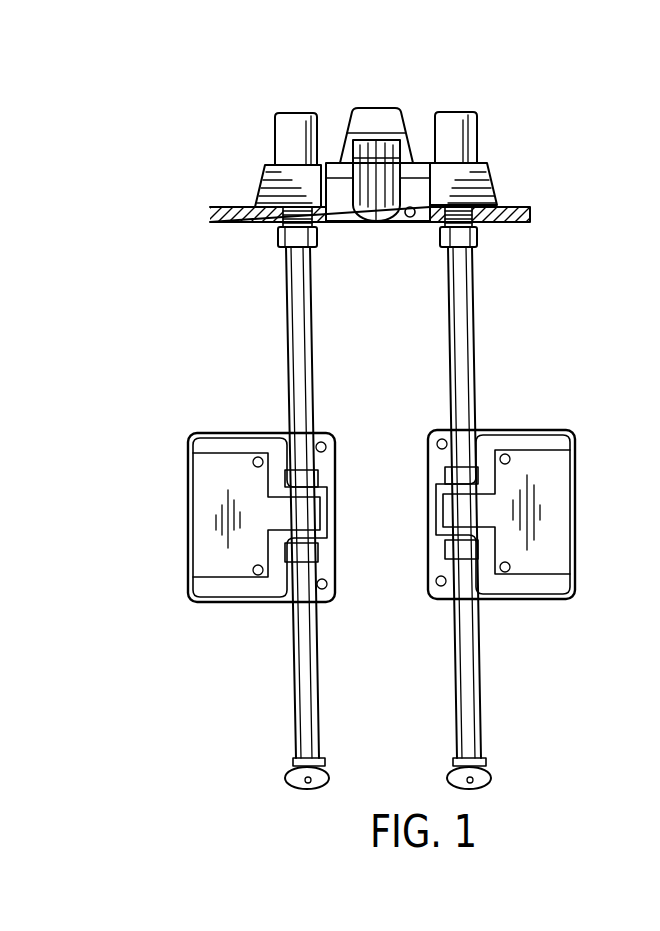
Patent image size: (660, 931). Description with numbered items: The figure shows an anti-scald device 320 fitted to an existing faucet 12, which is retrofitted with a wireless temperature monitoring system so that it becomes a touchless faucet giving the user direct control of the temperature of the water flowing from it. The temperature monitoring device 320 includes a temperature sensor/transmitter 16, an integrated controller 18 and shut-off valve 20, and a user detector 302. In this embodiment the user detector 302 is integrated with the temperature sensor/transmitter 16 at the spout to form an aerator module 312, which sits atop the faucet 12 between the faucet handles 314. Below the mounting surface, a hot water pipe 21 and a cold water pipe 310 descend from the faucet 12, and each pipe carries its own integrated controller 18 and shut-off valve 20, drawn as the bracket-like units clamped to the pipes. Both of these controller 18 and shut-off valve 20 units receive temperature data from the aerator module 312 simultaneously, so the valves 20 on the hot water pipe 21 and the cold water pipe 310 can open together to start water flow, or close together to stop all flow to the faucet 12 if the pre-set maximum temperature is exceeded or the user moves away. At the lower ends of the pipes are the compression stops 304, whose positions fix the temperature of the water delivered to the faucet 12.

The faucet 12 is at (400, 194).
The handles 314 is at (283, 130).
The aerator module 312 is at (490, 176).
The temperature sensor/transmitter 16 is at (375, 222).
The user detector 302 is at (410, 220).
The controller 18 is at (389, 516).
The shut-off valve 20 is at (204, 507).
The hot water pipe 21 is at (295, 685).
The cold water pipe 310 is at (480, 686).
The compression stops 304 is at (445, 772).
The anti-scald device 320 is at (389, 521).